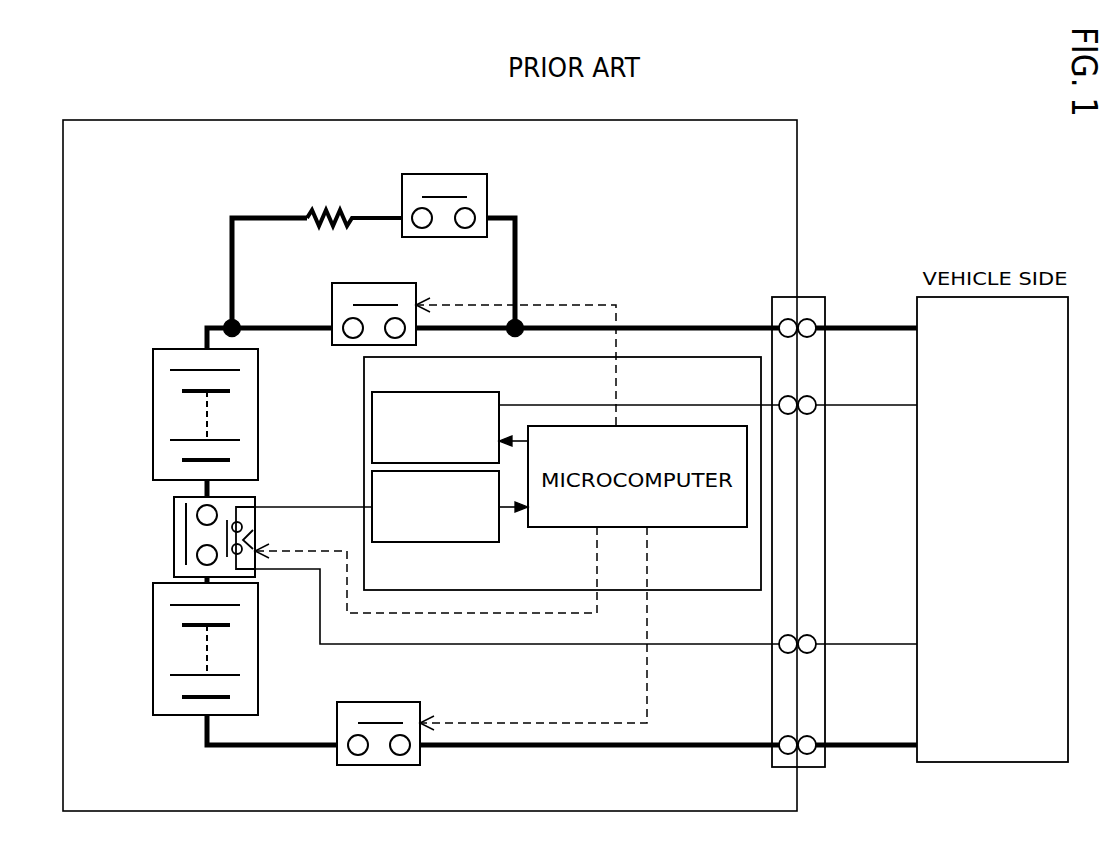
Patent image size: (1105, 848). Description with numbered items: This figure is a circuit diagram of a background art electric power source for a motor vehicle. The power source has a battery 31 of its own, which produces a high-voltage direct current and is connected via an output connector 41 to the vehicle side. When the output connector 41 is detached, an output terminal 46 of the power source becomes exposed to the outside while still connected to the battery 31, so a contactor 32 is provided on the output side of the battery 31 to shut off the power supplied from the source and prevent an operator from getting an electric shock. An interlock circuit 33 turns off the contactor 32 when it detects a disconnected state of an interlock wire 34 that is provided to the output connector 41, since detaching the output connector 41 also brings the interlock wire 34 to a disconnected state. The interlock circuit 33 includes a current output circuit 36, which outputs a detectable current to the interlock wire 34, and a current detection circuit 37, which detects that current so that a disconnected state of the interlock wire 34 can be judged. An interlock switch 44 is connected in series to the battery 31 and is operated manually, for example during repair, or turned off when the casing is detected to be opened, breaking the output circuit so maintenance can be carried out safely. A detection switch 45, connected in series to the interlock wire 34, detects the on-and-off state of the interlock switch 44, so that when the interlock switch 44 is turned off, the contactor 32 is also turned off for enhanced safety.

The battery 31 is at (173, 349).
The contactor 32 is at (332, 303).
The interlock circuit 33 is at (548, 357).
The interlock wire 34 is at (853, 405).
The current output circuit 36 is at (372, 440).
The current detection circuit 37 is at (445, 542).
The output connector 41 is at (818, 297).
The interlock switch 44 is at (174, 535).
The detection switch 45 is at (256, 537).
The output terminal 46 is at (788, 320).